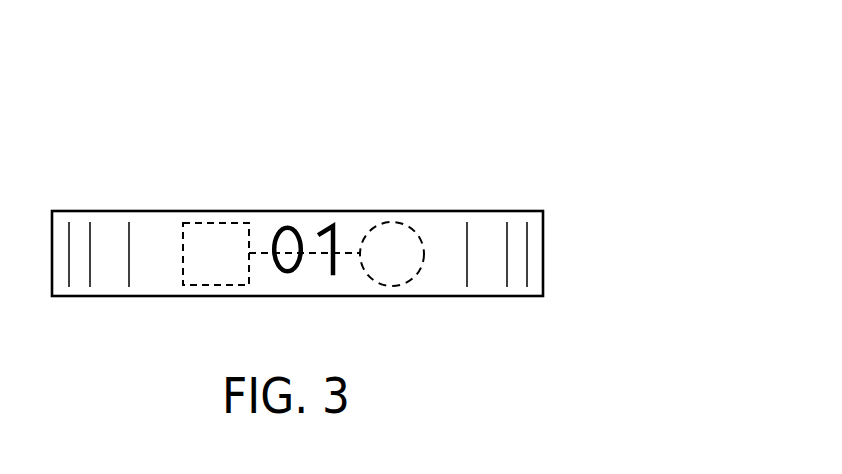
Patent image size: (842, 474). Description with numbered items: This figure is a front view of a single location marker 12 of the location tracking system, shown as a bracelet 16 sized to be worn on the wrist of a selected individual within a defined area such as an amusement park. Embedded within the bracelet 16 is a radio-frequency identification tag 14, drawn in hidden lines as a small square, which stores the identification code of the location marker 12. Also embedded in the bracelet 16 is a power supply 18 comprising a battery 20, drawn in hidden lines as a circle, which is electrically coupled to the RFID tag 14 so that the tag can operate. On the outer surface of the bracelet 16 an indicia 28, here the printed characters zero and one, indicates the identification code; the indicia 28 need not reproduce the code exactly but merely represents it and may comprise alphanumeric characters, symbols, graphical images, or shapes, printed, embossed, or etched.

The location marker 12 is at (533, 108).
The radio-frequency identification (RFID) tag 14 is at (214, 237).
The bracelet 16 is at (517, 237).
The power supply 18 is at (424, 305).
The battery 20 is at (461, 230).
The indicia 28 is at (310, 192).